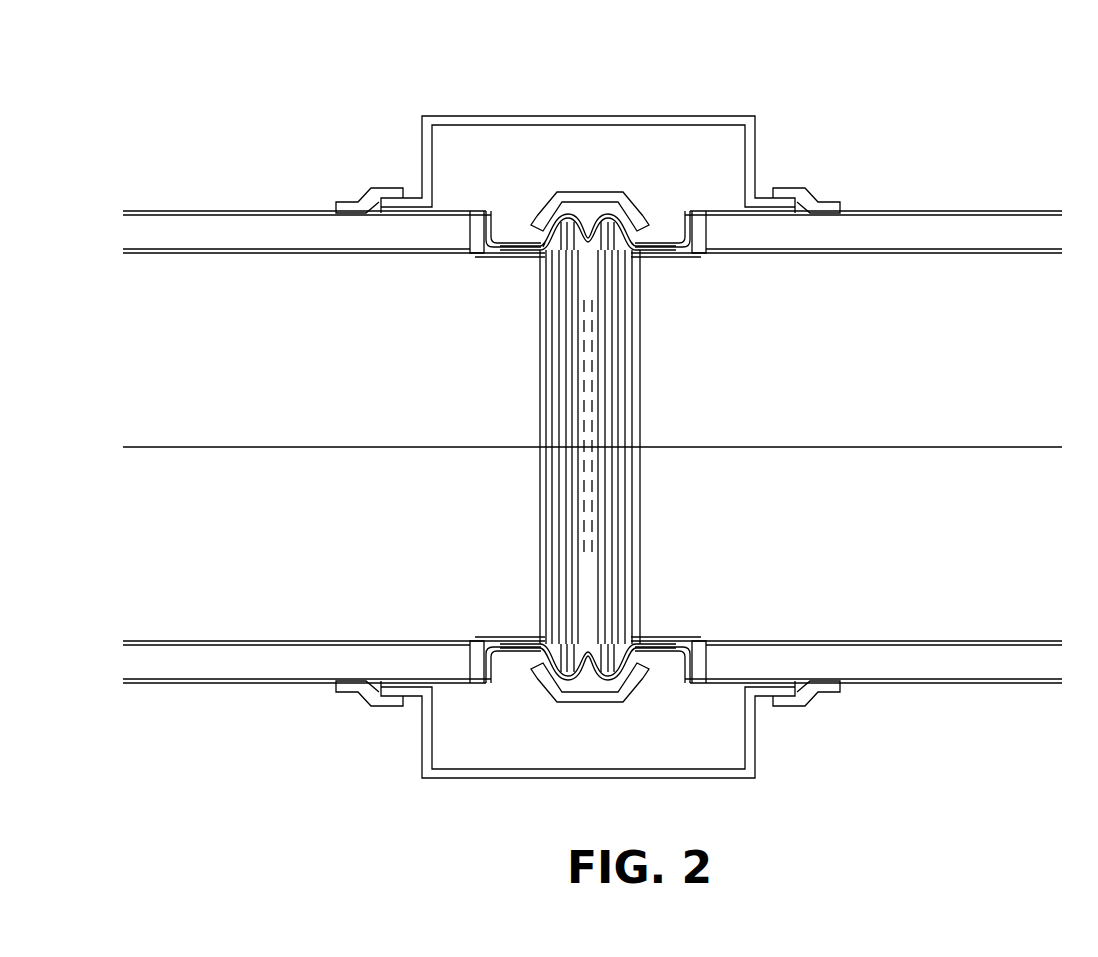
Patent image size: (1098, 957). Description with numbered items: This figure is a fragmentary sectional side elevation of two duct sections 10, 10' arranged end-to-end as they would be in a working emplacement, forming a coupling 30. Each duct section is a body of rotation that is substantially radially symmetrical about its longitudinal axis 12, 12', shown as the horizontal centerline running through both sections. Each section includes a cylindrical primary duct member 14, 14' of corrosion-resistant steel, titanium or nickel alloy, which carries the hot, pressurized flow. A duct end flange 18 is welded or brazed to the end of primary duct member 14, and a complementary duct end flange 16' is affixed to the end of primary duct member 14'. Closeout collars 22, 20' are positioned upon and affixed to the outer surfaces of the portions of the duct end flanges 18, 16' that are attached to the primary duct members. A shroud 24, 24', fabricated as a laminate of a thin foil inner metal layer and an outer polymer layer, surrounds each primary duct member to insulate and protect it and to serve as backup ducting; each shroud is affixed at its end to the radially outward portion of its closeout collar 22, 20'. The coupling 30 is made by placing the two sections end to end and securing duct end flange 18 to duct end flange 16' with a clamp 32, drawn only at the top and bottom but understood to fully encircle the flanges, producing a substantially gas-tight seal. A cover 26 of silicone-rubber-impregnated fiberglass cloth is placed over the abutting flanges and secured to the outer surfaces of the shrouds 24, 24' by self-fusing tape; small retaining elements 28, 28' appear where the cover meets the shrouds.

The duct section 10 is at (307, 500).
The duct section 10' is at (873, 500).
The longitudinal axis 12 is at (355, 424).
The longitudinal axis 12' is at (825, 425).
The primary duct member 14 is at (334, 447).
The primary duct member 14' is at (846, 447).
The duct end flange 16' is at (588, 410).
The duct end flange 18 is at (550, 216).
The closeout collar 20' is at (666, 426).
The closeout collar 22 is at (497, 228).
The shroud 24 is at (304, 413).
The shroud 24' is at (876, 414).
The cover 26 is at (504, 112).
The retaining clip 28 is at (345, 413).
The retaining clip 28' is at (829, 408).
The coupling 30 is at (587, 397).
The clamp 32 is at (590, 191).